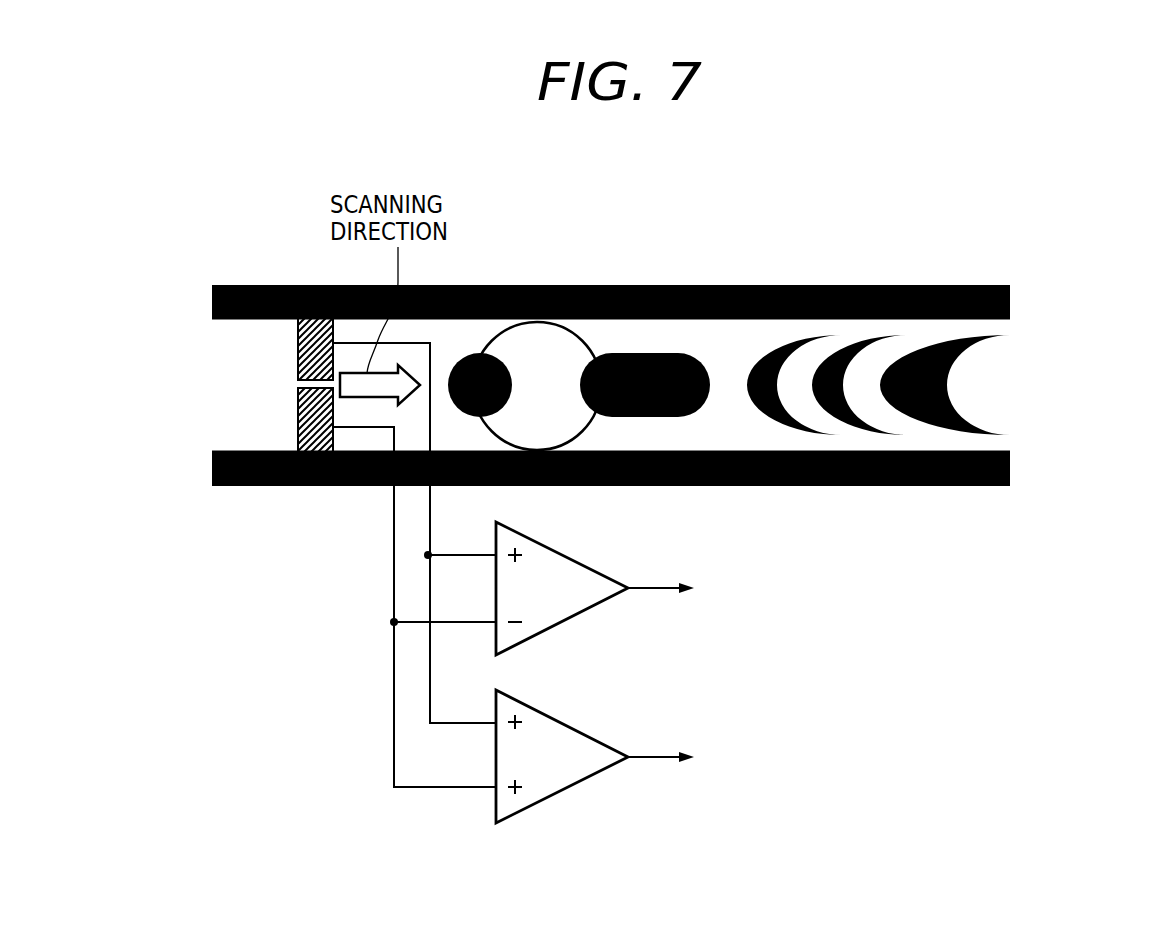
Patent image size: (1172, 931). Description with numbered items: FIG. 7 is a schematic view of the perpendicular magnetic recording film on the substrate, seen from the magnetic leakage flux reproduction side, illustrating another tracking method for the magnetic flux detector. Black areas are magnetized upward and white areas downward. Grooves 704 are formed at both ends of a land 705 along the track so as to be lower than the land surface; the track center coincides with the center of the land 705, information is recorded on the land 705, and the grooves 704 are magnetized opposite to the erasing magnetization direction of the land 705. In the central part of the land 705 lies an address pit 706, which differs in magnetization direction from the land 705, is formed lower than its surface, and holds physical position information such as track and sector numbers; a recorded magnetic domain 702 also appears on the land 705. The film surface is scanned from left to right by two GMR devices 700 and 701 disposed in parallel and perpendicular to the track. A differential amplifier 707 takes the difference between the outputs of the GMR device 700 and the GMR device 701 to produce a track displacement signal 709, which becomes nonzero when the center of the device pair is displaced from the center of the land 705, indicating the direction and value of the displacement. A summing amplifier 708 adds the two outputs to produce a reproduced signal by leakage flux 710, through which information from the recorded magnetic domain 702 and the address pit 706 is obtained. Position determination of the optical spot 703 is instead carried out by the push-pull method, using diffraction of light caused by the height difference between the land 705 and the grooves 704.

The GMR device 700 is at (298, 343).
The GMR device 701 is at (298, 425).
The recorded magnetic domain 702 is at (773, 350).
The optical spot 703 is at (535, 347).
The groove 704 is at (1022, 322).
The land 705 is at (1022, 450).
The address pit 706 is at (645, 360).
The differential amplifier 707 is at (601, 533).
The summing amplifier 708 is at (601, 703).
The track displacement signal 709 is at (840, 605).
The reproduced signal by leakage flux 710 is at (899, 773).